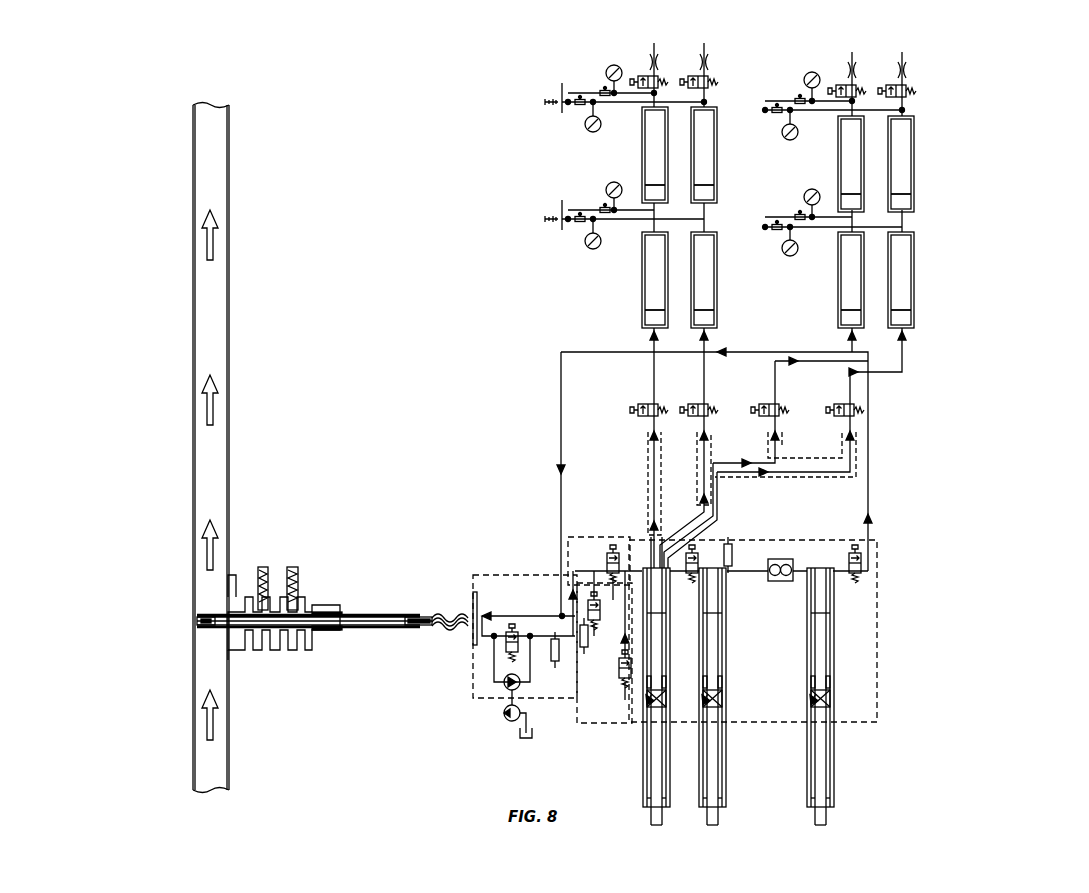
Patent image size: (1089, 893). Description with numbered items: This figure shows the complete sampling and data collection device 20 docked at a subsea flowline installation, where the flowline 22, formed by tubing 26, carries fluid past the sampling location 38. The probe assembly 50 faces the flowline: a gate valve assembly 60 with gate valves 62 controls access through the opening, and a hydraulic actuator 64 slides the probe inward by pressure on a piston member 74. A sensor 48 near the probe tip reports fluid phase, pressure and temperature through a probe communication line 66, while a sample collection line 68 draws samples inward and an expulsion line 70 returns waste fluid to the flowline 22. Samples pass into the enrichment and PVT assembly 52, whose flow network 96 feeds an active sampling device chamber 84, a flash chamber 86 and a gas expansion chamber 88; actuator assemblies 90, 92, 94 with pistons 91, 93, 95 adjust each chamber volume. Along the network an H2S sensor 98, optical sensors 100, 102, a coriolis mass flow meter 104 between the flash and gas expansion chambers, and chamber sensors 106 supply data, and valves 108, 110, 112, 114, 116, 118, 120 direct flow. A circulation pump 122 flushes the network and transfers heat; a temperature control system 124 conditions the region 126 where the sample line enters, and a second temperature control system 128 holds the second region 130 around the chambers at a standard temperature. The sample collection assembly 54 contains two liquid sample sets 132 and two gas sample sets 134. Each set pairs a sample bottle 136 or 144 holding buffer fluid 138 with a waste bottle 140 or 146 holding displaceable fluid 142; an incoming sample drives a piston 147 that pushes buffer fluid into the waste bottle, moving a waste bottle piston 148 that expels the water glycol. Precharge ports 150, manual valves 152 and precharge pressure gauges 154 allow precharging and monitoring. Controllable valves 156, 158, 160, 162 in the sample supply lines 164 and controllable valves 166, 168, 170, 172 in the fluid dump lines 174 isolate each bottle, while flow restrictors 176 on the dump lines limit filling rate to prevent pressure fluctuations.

The sampling and data collection device 20 is at (1023, 105).
The flowline 22 is at (232, 422).
The tubing 26 is at (193, 386).
The sampling location 38 is at (194, 480).
The sensor 48 is at (218, 627).
The probe assembly 50 is at (299, 594).
The enrichment and PVT assembly 52 is at (780, 448).
The sample collection assembly 54 is at (748, 196).
The gate valve assembly 60 is at (304, 579).
The gate valves 62 is at (267, 572).
The actuator 64 is at (317, 609).
The probe communication line 66 is at (402, 619).
The sample collection line 68 is at (377, 625).
The expulsion line 70 is at (390, 611).
The piston member 74 is at (322, 610).
The active sampling device chamber 84 is at (686, 588).
The flash chamber 86 is at (716, 667).
The gas expansion chamber 88 is at (818, 673).
The actuator assembly 90 is at (662, 700).
The piston 91 is at (644, 725).
The actuator assembly 92 is at (722, 700).
The piston 93 is at (706, 734).
The actuator assembly 94 is at (826, 700).
The piston 95 is at (814, 725).
The flow network 96 is at (558, 348).
The H2S sensor 98 is at (558, 662).
The optical sensor 100 is at (584, 646).
The optical sensor 102 is at (728, 545).
The coriolis mass flow meter 104 is at (795, 543).
The sensors 106 is at (614, 686).
The valve 108 is at (500, 646).
The valve 110 is at (588, 584).
The valve 112 is at (612, 548).
The valve 114 is at (704, 637).
The valve 116 is at (706, 535).
The valve 118 is at (764, 556).
The valve 120 is at (888, 543).
The circulation pump 122 is at (504, 687).
The temperature control system 124 is at (519, 545).
The region 126 is at (486, 574).
The second temperature control system 128 is at (758, 631).
The second region 130 is at (880, 673).
The liquid sample set 132 is at (758, 131).
The gas sample set 134 is at (779, 196).
The sample bottle 136 is at (640, 290).
The buffer fluid 138 is at (644, 255).
The waste bottle 140 is at (650, 158).
The displaceable fluid 142 is at (648, 125).
The sample bottle 144 is at (718, 288).
The waste bottle 146 is at (717, 178).
The piston 147 is at (644, 320).
The waste bottle piston 148 is at (643, 190).
The precharge ports 150 is at (697, 160).
The valves 152 is at (602, 90).
The precharge pressure gauges 154 is at (614, 61).
The controllable valve 156 is at (652, 404).
The controllable valve 158 is at (702, 404).
The controllable valve 160 is at (772, 404).
The controllable valve 162 is at (846, 404).
The sample supply line 164 is at (734, 479).
The controllable valve 166 is at (658, 76).
The controllable valve 168 is at (708, 76).
The controllable valve 170 is at (856, 85).
The controllable valve 172 is at (906, 85).
The fluid dump line 174 is at (658, 92).
The flow restrictor 176 is at (658, 61).